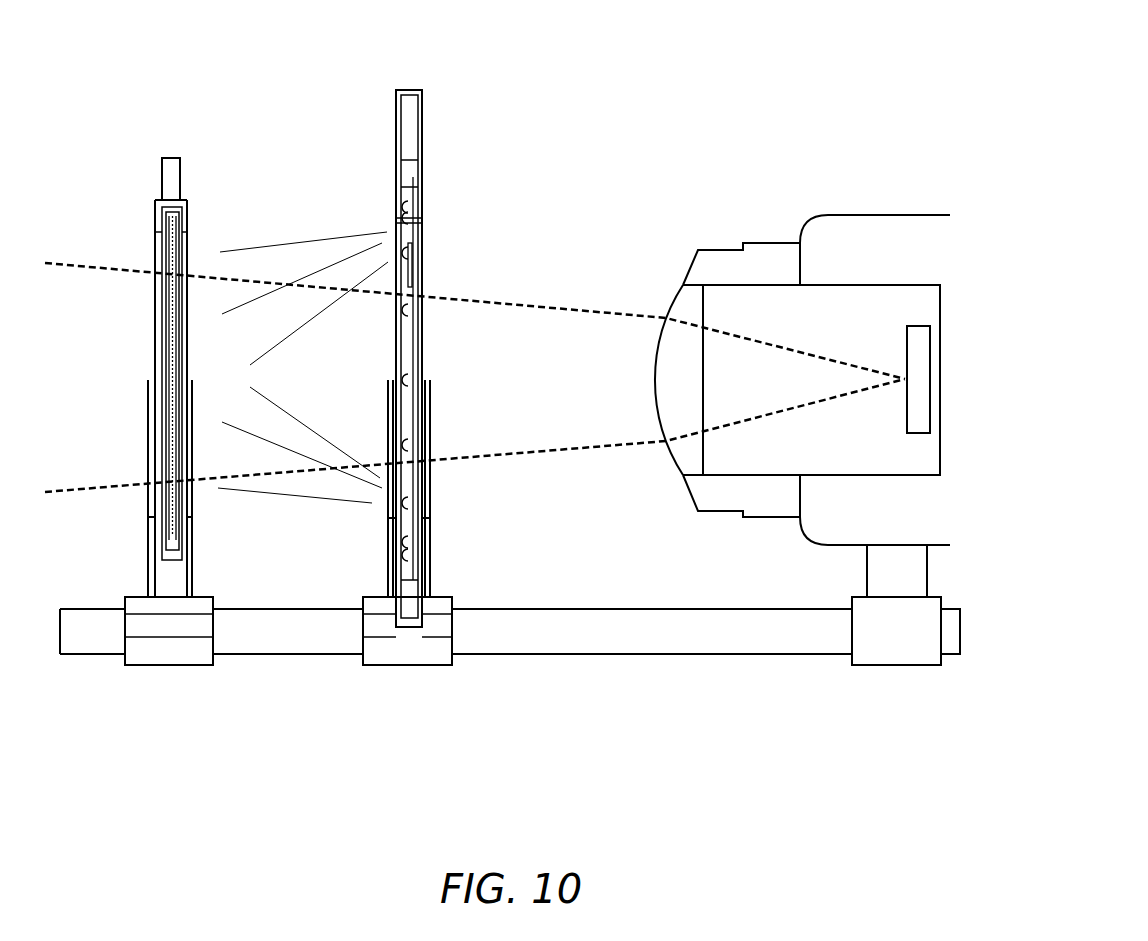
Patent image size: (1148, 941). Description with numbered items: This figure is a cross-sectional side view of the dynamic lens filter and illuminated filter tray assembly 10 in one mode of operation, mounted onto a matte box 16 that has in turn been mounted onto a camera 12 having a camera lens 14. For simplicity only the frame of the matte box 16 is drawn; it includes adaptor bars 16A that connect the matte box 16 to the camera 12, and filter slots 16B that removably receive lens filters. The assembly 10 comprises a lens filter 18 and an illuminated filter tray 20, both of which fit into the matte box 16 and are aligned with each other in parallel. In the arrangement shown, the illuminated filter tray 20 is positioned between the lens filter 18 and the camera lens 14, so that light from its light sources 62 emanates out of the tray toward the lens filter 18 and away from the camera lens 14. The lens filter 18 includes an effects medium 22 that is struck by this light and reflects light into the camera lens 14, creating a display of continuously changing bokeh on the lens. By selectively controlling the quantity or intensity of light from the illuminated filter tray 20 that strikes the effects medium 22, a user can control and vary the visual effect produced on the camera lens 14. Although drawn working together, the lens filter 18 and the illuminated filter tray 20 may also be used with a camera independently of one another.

The dynamic lens filter and illuminated filter tray assembly 10 is at (290, 86).
The camera 12 is at (920, 213).
The camera lens 14 is at (668, 313).
The matte box 16 is at (596, 654).
The adaptor bars 16A is at (896, 605).
The filter slots 16B is at (175, 653).
The lens filter 18 is at (167, 222).
The illuminated filter tray 20 is at (415, 88).
The effects medium 22 is at (187, 246).
The light sources 62 is at (400, 197).